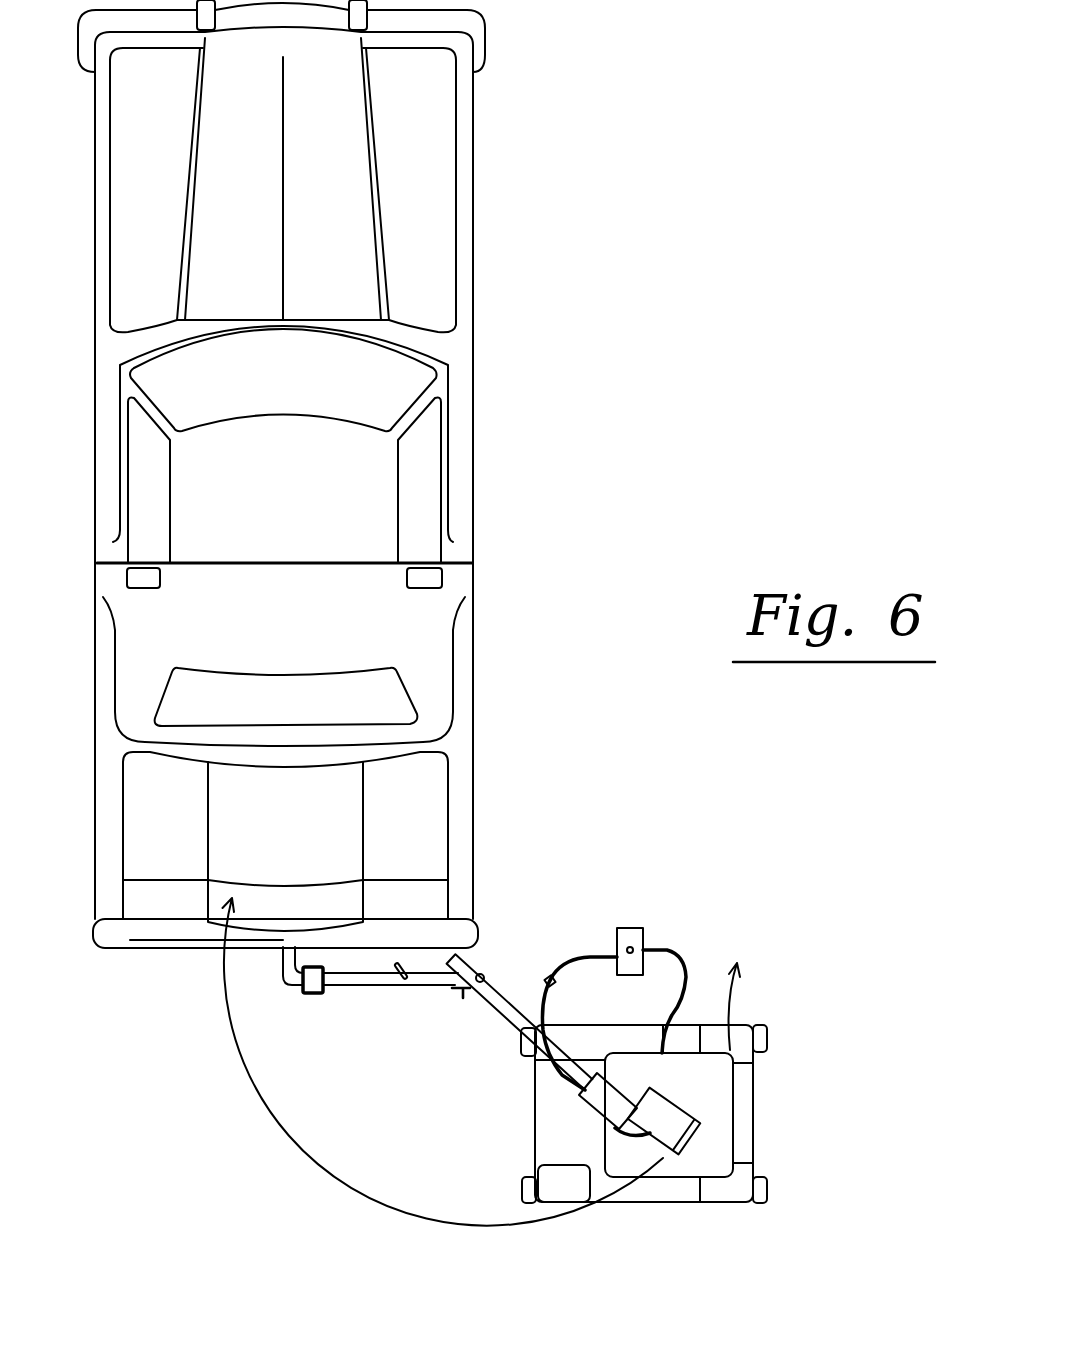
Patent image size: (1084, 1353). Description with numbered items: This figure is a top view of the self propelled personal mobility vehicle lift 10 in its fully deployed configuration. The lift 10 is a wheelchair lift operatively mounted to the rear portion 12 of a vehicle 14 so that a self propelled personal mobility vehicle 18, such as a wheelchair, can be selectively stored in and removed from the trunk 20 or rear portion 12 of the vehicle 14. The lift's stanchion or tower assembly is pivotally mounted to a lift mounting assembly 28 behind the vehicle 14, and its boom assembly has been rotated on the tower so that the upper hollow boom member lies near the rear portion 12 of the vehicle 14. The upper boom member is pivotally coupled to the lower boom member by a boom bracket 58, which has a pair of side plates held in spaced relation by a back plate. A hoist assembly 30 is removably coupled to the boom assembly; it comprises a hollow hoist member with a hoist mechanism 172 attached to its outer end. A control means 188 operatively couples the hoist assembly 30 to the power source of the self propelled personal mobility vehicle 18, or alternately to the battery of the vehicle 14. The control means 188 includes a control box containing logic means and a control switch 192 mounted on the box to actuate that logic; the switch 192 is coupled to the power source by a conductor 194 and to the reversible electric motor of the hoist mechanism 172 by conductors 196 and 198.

The self propelled personal mobility vehicle lift 10 is at (387, 1094).
The rear portion 12 is at (465, 767).
The vehicle 14 is at (503, 692).
The self propelled personal mobility vehicle 18 is at (758, 1114).
The trunk 20 is at (440, 860).
The lift mounting assembly 28 is at (309, 1025).
The hoist assembly 30 is at (571, 1146).
The boom bracket 58 is at (480, 950).
The hoist mechanism 172 is at (715, 1131).
The control means 188 is at (640, 985).
The control switch 192 is at (630, 928).
The conductor 194 is at (680, 960).
The conductor 196 is at (587, 958).
The conductor 198 is at (570, 1082).